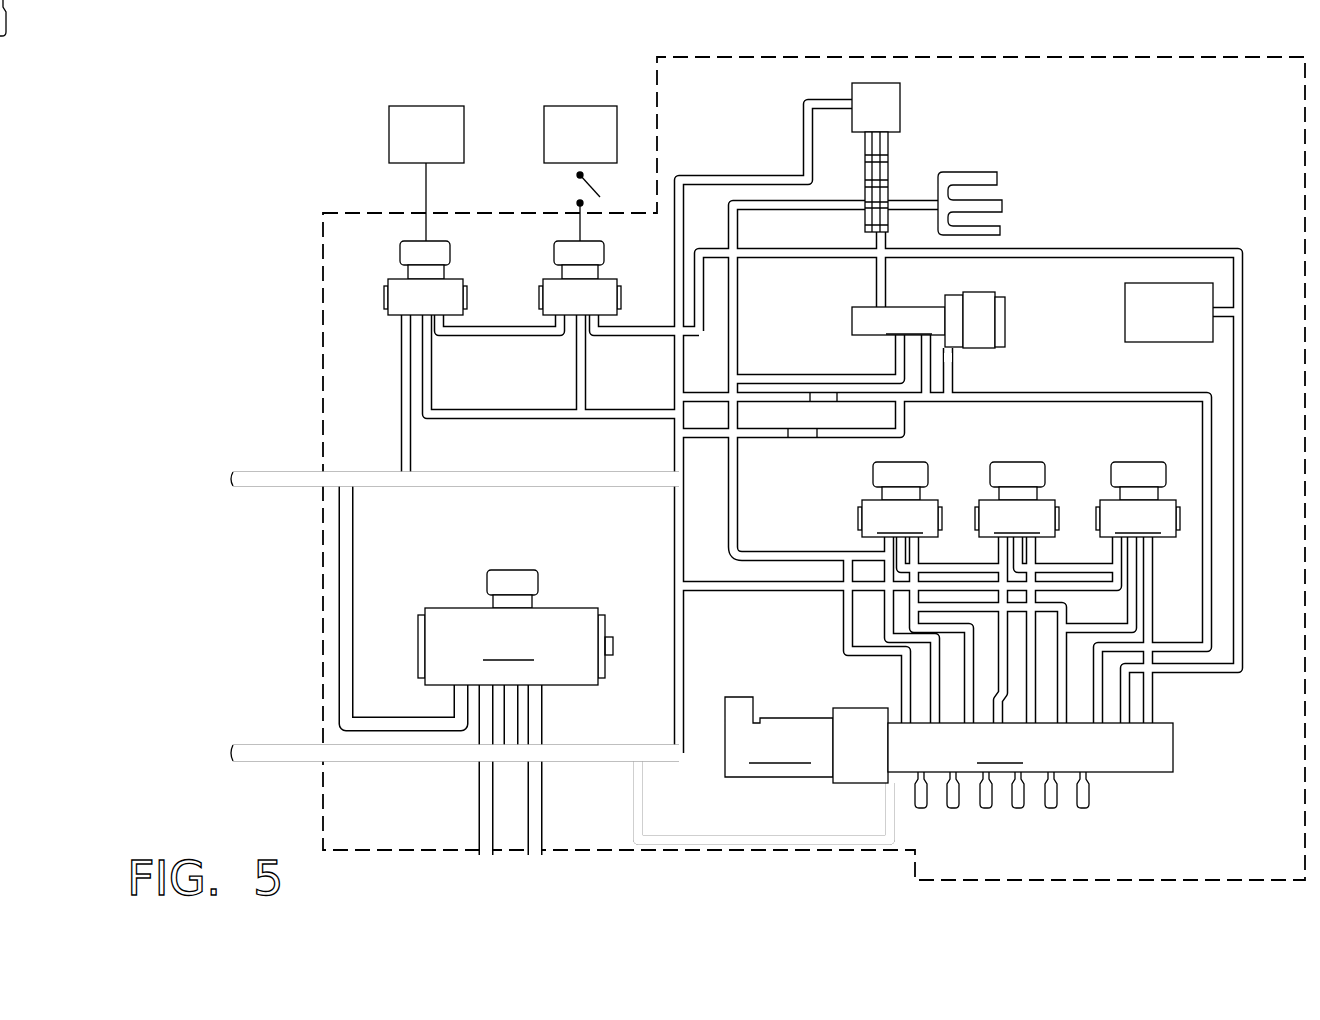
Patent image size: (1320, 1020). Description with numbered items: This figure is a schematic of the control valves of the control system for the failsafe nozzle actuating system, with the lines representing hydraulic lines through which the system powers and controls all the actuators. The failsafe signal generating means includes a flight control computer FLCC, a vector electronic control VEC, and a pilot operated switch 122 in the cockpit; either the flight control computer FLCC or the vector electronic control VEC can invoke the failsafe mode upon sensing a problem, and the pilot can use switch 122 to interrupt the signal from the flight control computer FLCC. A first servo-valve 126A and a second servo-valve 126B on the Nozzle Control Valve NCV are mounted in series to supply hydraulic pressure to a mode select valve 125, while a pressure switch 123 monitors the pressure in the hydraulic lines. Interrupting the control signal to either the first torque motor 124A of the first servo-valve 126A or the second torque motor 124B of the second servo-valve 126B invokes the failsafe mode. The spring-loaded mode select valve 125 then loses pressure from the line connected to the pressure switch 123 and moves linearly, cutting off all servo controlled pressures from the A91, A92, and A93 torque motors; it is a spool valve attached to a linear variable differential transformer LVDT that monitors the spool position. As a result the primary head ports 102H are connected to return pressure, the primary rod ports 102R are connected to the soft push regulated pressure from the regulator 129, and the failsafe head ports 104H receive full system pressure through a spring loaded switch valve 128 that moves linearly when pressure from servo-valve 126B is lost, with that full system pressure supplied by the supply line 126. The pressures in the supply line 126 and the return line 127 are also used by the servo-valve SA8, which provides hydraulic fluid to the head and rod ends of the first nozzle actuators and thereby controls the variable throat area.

The nozzle control valve NCV is at (383, 211).
The vector electronic control VEC is at (426, 173).
The flight control computer FLCC is at (580, 134).
The pilot operated switch 122 is at (600, 197).
The first torque motor 124A is at (440, 243).
The second torque motor 124B is at (556, 246).
The first servo-valve 126A is at (396, 311).
The second servo-valve 126B is at (550, 311).
The supply line 126 is at (272, 490).
The return line 127 is at (265, 745).
The spring loaded switch valve 128 is at (900, 108).
The failsafe head port 104H is at (990, 172).
The regulator 129 is at (928, 327).
The pressure switch 123 is at (1147, 342).
The A91 torque motor A91 is at (900, 499).
The A92 torque motor A92 is at (1017, 499).
The A93 torque motor A93 is at (1138, 499).
The servo-valve SA8 is at (515, 627).
The linear variable differential transformer LVDT is at (806, 740).
The mode select valve 125 is at (1030, 747).
The primary head port 102H is at (915, 817).
The primary rod port 102R is at (1012, 817).